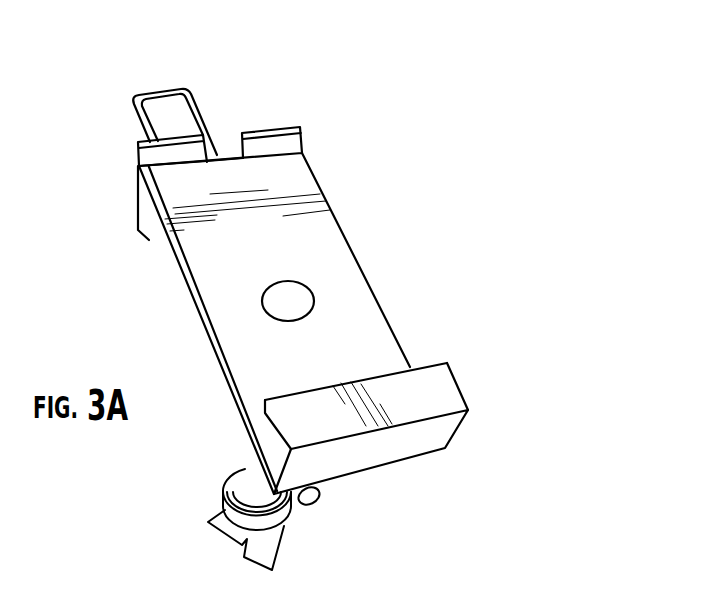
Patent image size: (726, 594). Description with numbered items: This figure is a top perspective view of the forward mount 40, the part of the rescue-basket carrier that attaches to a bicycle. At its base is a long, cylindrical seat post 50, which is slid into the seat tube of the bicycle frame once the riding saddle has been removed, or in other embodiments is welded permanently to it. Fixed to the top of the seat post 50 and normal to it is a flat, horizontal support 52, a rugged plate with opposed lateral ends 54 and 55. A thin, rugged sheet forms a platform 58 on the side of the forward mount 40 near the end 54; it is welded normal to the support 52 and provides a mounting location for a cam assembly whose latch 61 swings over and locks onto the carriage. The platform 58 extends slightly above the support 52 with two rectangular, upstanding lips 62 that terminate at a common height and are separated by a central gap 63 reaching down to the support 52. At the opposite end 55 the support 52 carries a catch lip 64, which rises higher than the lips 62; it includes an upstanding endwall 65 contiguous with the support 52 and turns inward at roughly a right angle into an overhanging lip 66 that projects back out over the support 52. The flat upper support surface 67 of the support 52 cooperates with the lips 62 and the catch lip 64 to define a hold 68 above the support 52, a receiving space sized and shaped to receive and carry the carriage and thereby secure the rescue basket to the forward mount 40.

The forward mount 40 is at (534, 230).
The seat post 50 is at (243, 474).
The support 52 is at (382, 343).
The end 54 is at (140, 168).
The end 55 is at (272, 476).
The platform 58 is at (148, 236).
The latch 61 is at (162, 100).
The lips 62 is at (178, 134).
The central gap 63 is at (225, 139).
The catch lip 64 is at (470, 416).
The upstanding endwall 65 is at (427, 435).
The overhanging lip 66 is at (445, 391).
The support surface 67 is at (250, 267).
The hold 68 is at (323, 255).